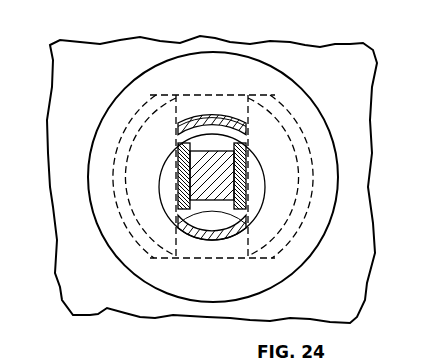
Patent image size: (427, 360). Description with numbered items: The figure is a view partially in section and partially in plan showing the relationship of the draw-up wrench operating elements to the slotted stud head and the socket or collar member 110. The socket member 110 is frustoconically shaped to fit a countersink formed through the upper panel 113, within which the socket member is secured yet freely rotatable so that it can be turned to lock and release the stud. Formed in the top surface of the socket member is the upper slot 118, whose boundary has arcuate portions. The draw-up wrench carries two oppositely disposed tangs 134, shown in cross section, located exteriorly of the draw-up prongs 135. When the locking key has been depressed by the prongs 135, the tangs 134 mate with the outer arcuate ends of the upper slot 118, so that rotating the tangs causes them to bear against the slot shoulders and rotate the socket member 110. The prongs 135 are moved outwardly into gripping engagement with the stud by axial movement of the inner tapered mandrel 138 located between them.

The socket or collar member 110 is at (162, 80).
The upper panel 113 is at (212, 179).
The upper slot 118 is at (224, 113).
The tangs 134 is at (189, 121).
The draw-up prongs 135 is at (238, 161).
The inner tapered mandrel 138 is at (242, 223).